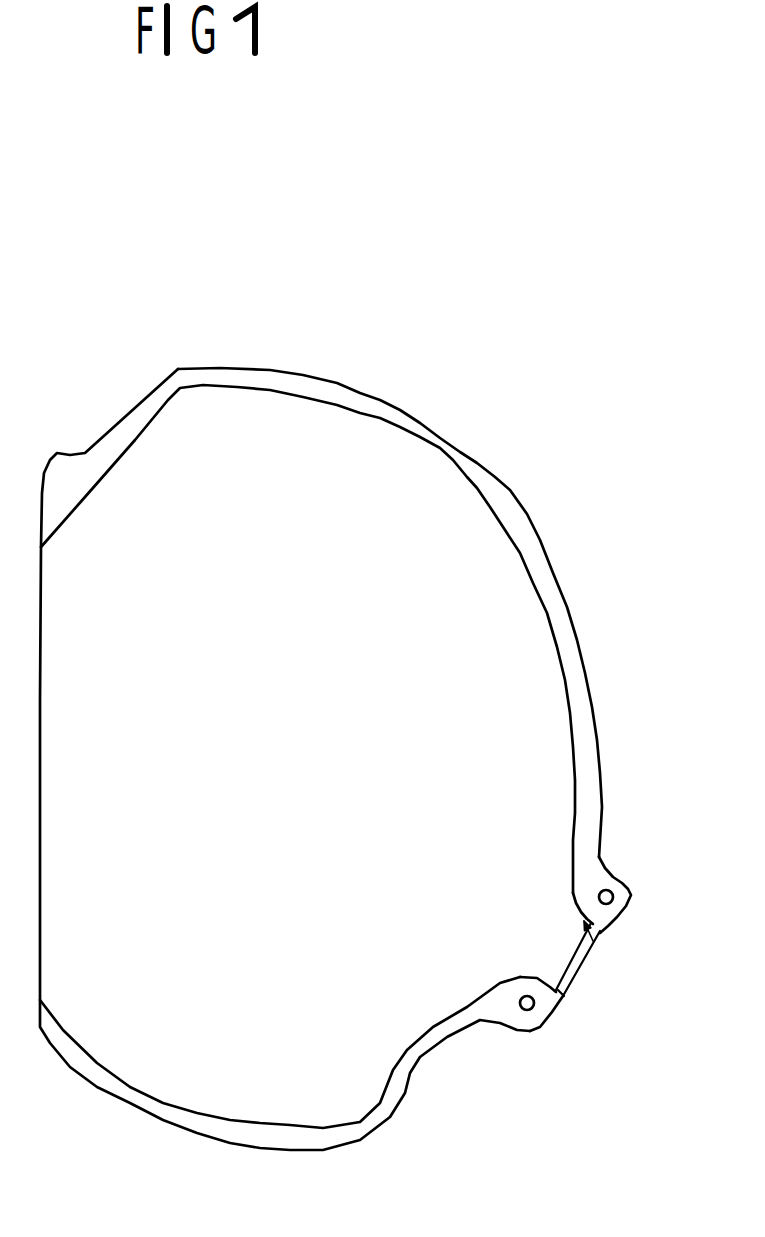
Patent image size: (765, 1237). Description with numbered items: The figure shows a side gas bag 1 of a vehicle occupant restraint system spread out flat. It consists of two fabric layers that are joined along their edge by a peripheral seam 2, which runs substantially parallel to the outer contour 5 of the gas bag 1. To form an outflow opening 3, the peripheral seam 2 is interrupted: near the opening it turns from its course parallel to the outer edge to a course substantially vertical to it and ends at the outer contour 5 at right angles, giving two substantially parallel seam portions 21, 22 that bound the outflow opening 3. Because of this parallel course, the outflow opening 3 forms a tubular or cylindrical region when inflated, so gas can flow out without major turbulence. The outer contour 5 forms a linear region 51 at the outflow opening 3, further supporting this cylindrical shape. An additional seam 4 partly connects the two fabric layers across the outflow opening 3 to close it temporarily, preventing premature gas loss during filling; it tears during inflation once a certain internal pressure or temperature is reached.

The gas bag 1 is at (365, 347).
The peripheral seam 2 is at (493, 508).
The outer contour 5 is at (557, 563).
The first parallel portion of the peripheral seam 21 is at (597, 950).
The second parallel portion of the peripheral seam 22 is at (541, 973).
The outflow opening 3 is at (555, 962).
The additional seam 4 is at (582, 967).
The linear region 51 is at (565, 1000).